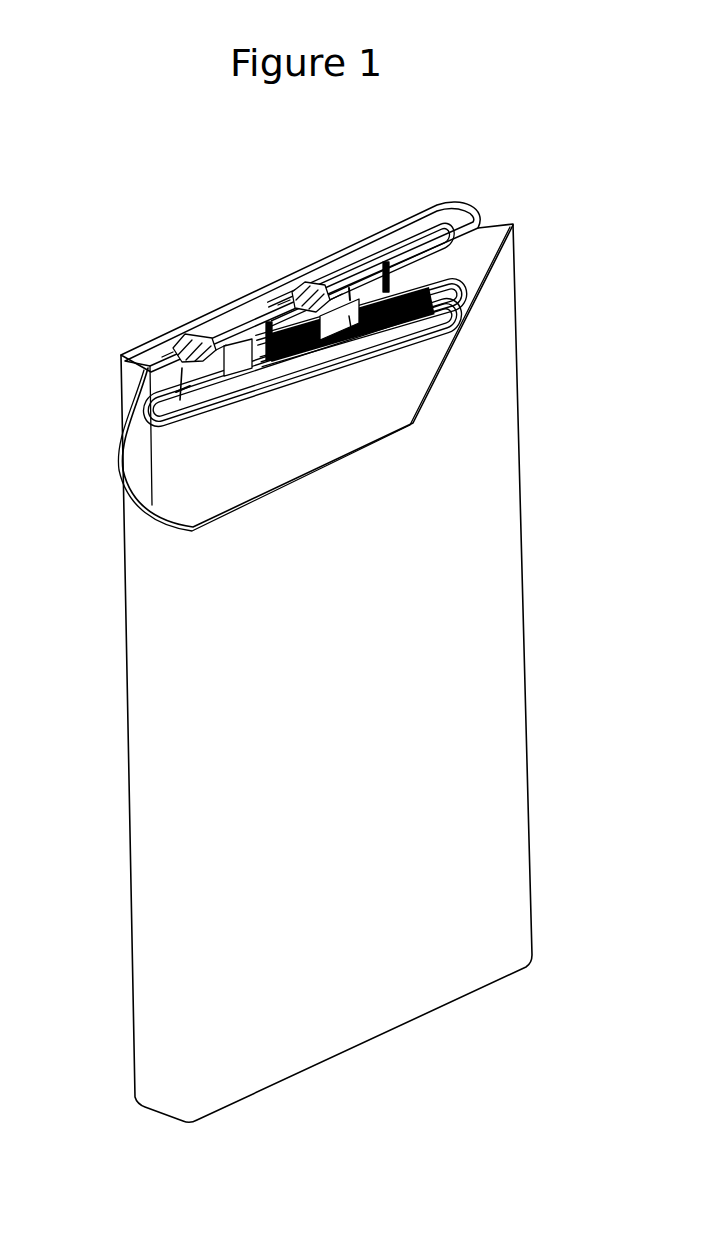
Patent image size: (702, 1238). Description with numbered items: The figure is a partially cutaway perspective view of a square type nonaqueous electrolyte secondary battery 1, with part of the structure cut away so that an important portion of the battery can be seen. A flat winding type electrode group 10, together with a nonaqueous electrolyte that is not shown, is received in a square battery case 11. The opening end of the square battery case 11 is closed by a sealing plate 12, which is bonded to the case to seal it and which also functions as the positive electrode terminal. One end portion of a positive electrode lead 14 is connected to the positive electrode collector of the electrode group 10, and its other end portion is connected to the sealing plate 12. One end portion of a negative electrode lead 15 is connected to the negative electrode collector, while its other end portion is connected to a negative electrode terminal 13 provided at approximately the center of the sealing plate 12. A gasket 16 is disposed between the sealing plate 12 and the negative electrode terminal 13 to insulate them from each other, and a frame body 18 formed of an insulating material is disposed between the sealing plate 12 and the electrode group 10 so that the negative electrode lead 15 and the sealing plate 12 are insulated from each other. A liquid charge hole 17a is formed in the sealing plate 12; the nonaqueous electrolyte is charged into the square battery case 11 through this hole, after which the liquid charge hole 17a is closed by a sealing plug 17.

The nonaqueous electrolyte secondary battery 1 is at (104, 258).
The electrode group 10 is at (323, 445).
The square battery case 11 is at (496, 822).
The sealing plate 12 is at (365, 263).
The negative electrode terminal 13 is at (307, 282).
The positive electrode lead 14 is at (240, 372).
The negative electrode lead 15 is at (350, 320).
The gasket 16 is at (262, 290).
The sealing plug 17 is at (182, 336).
The liquid charge hole 17a is at (180, 400).
The frame body 18 is at (385, 262).